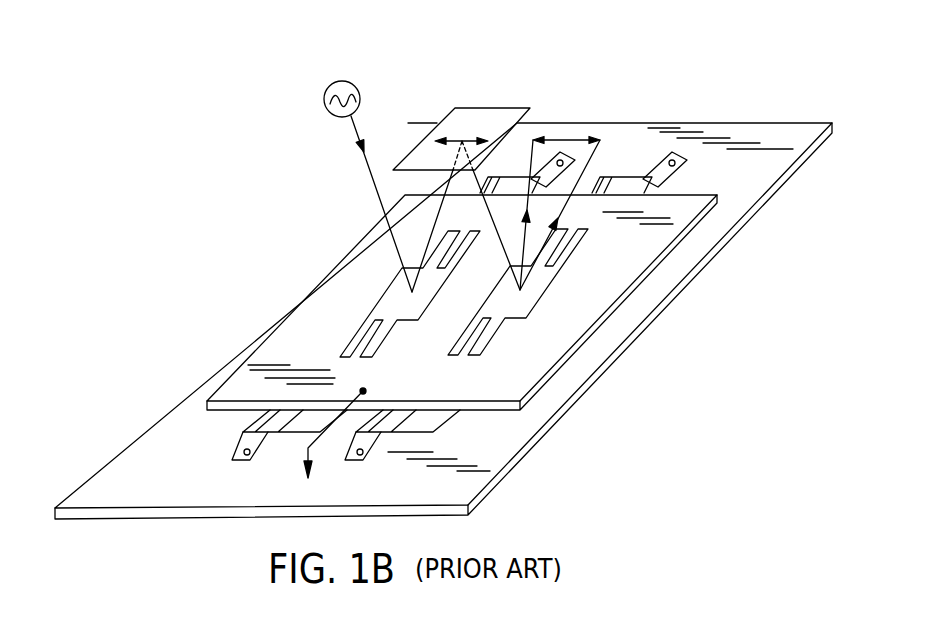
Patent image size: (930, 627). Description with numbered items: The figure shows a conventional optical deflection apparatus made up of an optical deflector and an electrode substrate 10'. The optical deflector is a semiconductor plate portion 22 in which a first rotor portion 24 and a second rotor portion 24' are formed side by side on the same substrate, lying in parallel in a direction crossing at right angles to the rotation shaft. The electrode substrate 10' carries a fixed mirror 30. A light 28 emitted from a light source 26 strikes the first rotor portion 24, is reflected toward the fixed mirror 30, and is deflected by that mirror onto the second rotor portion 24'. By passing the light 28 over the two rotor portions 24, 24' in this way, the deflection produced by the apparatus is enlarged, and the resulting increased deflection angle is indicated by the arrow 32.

The electrode substrate 10' is at (443, 321).
The semiconductor plate portion 22 is at (518, 385).
The first rotor portion 24 is at (410, 294).
The second rotor portion 24' is at (527, 292).
The light source 26 is at (360, 93).
The light 28 is at (351, 131).
The fixed mirror 30 is at (489, 119).
The arrow 32 is at (573, 136).